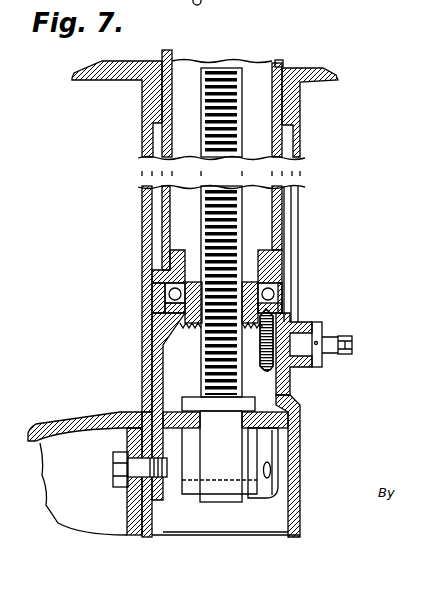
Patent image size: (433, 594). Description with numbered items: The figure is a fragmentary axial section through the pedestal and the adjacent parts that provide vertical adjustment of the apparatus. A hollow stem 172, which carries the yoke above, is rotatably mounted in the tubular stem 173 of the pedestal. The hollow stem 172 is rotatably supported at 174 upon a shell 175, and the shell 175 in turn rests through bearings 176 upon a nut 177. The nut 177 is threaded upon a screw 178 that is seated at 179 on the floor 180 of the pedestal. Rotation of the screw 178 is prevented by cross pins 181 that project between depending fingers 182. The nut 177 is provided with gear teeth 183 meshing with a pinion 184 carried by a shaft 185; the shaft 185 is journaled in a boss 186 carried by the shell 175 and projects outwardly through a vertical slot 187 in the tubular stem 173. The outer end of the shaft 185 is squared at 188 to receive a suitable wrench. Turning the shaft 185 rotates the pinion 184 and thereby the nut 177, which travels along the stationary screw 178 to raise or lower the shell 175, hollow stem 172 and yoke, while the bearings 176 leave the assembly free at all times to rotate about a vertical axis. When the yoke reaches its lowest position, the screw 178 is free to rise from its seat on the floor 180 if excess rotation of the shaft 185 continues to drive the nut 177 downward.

The hollow stem 172 is at (281, 60).
The tubular stem 173 is at (141, 148).
The rotatable support 174 is at (276, 258).
The shell 175 is at (284, 281).
The bearings 176 is at (293, 291).
The nut 177 is at (172, 313).
The screw 178 is at (232, 141).
The seat 179 is at (255, 405).
The floor 180 is at (289, 421).
The cross pins 181 is at (248, 489).
The depending fingers 182 is at (250, 448).
The gear teeth 183 is at (162, 346).
The pinion 184 is at (272, 372).
The shaft 185 is at (296, 348).
The boss 186 is at (302, 322).
The vertical slot 187 is at (297, 187).
The squared end 188 is at (352, 339).